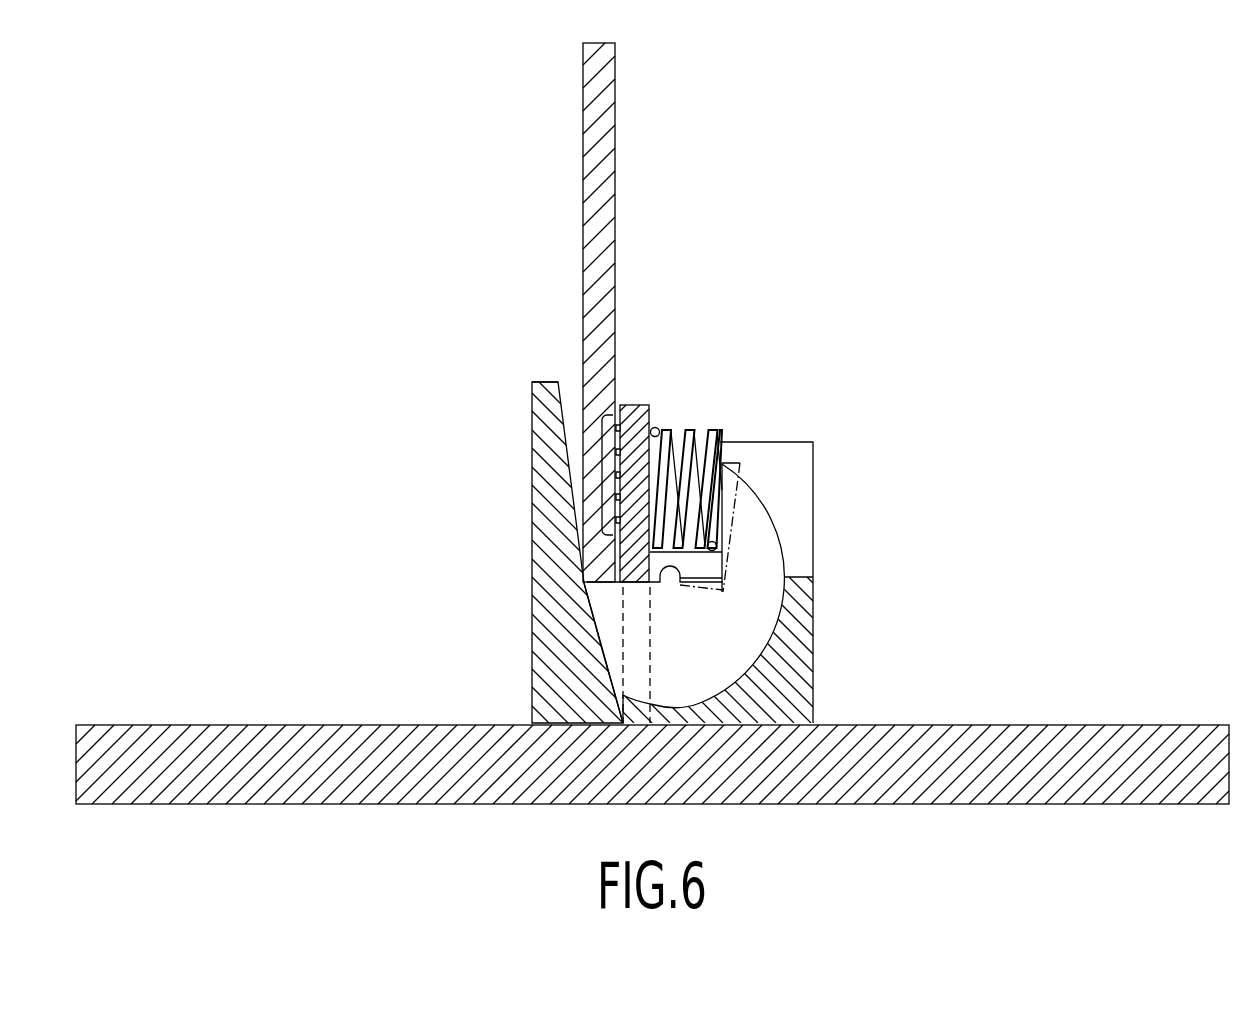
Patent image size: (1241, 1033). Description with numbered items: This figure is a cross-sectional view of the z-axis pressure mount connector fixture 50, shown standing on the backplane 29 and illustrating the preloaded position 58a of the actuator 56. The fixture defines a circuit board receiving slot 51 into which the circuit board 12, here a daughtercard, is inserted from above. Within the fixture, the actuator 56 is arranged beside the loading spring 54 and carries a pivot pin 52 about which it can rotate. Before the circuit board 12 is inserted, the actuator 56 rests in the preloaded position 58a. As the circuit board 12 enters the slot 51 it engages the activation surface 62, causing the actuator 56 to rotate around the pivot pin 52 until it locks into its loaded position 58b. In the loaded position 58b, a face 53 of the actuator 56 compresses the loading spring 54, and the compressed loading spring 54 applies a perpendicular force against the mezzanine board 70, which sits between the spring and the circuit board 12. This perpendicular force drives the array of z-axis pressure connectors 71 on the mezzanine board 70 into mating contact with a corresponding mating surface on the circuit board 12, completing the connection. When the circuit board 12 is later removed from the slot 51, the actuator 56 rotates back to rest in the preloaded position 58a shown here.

The circuit board 12 is at (596, 98).
The backplane 29 is at (133, 725).
The connector fixture 50 is at (541, 428).
The circuit board receiving slot 51 is at (566, 383).
The pivot pin 52 is at (680, 581).
The face 53 is at (723, 490).
The loading spring 54 is at (720, 442).
The actuator 56 is at (732, 660).
The preloaded position 58a is at (593, 647).
The loaded position 58b is at (610, 685).
The activation surface 62 is at (606, 572).
The mezzanine board 70 is at (636, 407).
The array of z-axis pressure connectors 71 is at (601, 474).